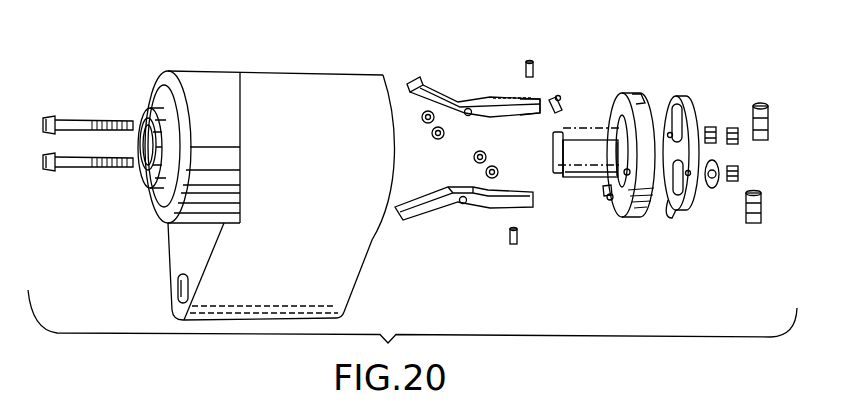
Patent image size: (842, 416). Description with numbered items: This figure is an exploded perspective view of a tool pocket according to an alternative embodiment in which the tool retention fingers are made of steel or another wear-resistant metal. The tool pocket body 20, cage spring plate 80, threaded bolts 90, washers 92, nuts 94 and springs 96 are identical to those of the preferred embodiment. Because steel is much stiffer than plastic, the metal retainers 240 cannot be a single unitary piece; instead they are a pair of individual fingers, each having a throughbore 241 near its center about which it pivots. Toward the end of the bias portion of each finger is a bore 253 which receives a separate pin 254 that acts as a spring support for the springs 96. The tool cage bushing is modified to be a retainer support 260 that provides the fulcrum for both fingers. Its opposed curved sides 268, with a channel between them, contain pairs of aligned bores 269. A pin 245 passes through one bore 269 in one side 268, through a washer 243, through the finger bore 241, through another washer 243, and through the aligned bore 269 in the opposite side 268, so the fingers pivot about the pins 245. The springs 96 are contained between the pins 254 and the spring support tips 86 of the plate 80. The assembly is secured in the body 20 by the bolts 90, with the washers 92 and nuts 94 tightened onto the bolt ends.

The tool pocket body 20 is at (166, 251).
The threaded bolts 90 is at (103, 158).
The metal retainers 240 is at (432, 76).
The throughbore 241 is at (468, 108).
The pin 254 is at (535, 62).
The bore 253 is at (535, 97).
The pins 245 is at (557, 99).
The washers 243 is at (474, 160).
The opposed curved sides 268 is at (557, 148).
The aligned bores 269 is at (578, 142).
The retainer support 260 is at (637, 84).
The cage spring plate 80 is at (694, 91).
The spring support tip 86 is at (675, 198).
The washers 92 is at (713, 189).
The nuts 94 is at (738, 177).
The springs 96 is at (761, 204).